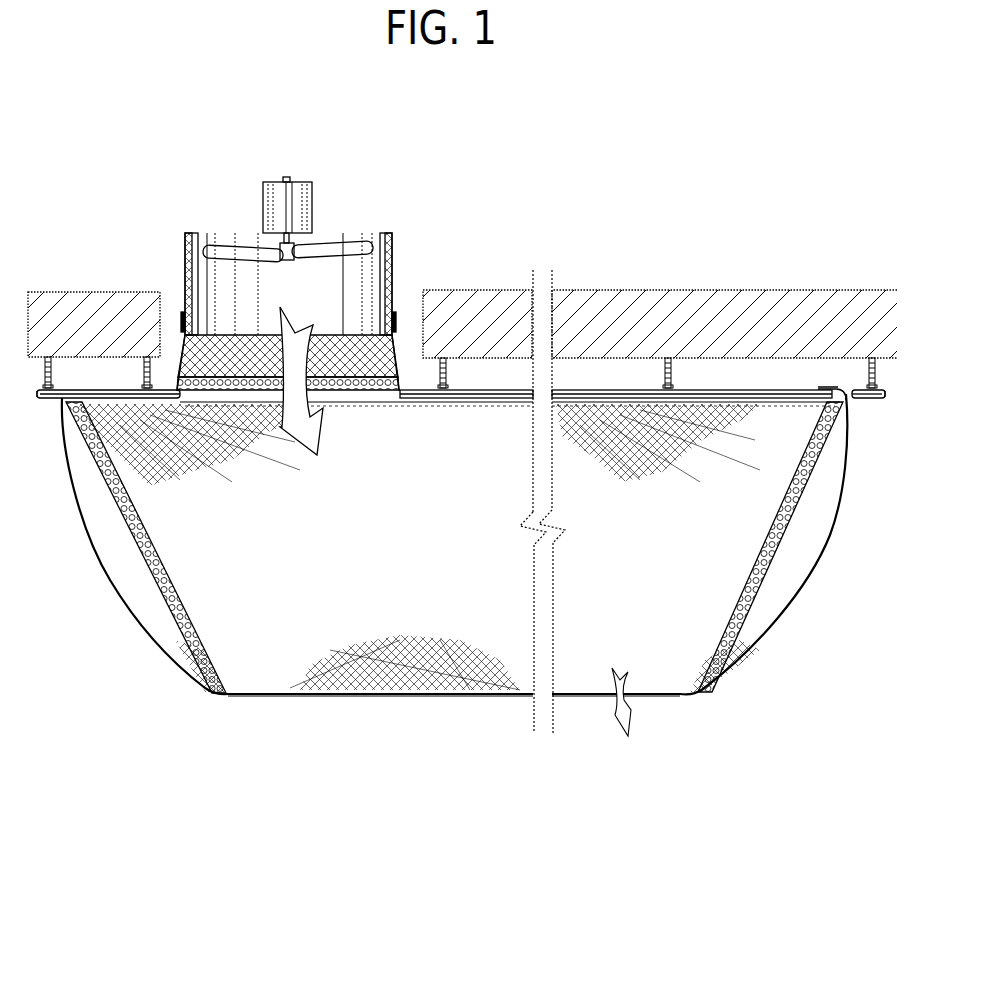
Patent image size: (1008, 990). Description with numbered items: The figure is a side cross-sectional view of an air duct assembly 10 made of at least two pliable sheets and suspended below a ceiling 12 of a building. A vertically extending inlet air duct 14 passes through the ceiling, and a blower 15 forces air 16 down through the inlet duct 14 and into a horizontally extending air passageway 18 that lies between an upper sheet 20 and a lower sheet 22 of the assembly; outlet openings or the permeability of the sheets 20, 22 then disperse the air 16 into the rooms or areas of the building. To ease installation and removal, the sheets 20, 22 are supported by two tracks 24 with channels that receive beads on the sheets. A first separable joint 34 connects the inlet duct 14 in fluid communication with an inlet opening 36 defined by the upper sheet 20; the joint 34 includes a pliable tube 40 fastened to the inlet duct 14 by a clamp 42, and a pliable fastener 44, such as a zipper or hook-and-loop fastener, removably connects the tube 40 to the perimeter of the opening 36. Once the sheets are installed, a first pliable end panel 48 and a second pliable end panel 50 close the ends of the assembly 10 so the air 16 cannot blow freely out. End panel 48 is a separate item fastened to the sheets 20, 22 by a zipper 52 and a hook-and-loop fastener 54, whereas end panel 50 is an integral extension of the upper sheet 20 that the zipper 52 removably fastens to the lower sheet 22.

The air duct assembly 10 is at (212, 783).
The ceiling 12 is at (495, 398).
The inlet air duct 14 is at (185, 245).
The blower 15 is at (330, 243).
The air 16 is at (298, 440).
The air passageway 18 is at (457, 567).
The upper sheet 20 is at (600, 392).
The lower sheet 22 is at (442, 698).
The track 24 is at (47, 402).
The first separable joint 34 is at (345, 407).
The inlet opening 36 is at (237, 412).
The pliable tube 40 is at (398, 345).
The clamp 42 is at (183, 320).
The pliable fastener 44 is at (383, 388).
The first pliable end panel 48 is at (808, 568).
The second pliable end panel 50 is at (112, 585).
The zipper 52 is at (128, 525).
The hook-and-loop fastener 54 is at (805, 390).